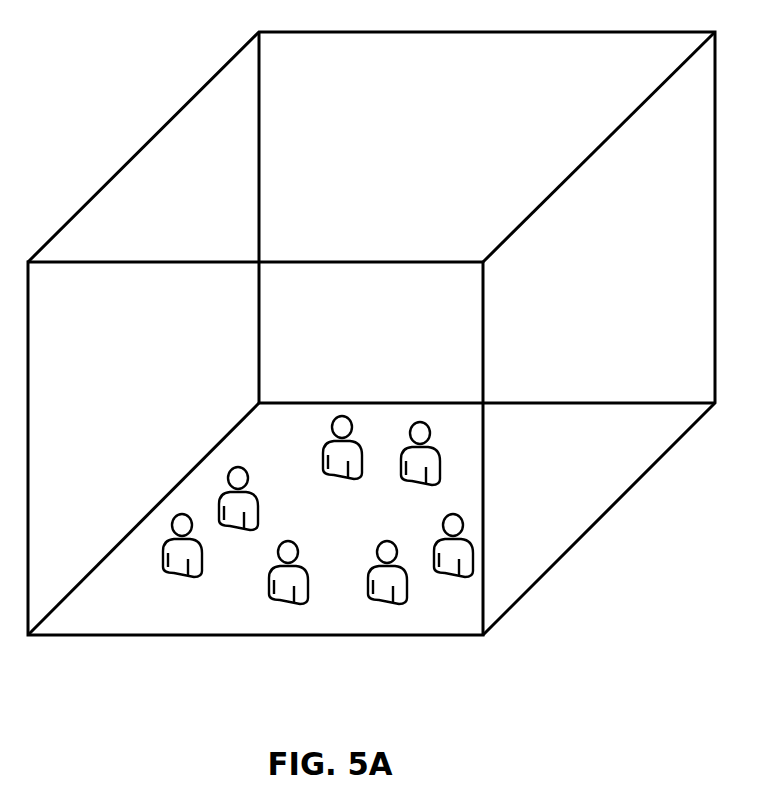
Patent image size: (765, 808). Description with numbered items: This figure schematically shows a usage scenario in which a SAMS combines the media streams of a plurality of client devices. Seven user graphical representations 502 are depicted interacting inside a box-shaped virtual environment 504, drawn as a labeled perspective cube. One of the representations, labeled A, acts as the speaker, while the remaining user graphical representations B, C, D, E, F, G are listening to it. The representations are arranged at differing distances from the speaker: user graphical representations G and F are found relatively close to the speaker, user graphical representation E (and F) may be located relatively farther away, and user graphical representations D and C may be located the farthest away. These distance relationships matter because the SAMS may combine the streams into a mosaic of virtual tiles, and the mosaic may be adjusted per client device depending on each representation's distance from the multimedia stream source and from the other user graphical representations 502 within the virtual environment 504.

The user graphical representations 502 is at (170, 523).
The virtual environment 504 is at (135, 155).
The user graphical representation B is at (387, 582).
The user graphical representation C is at (453, 555).
The user graphical representation D is at (420, 465).
The user graphical representation E is at (342, 458).
The user graphical representation F is at (288, 584).
The user graphical representation G is at (238, 510).